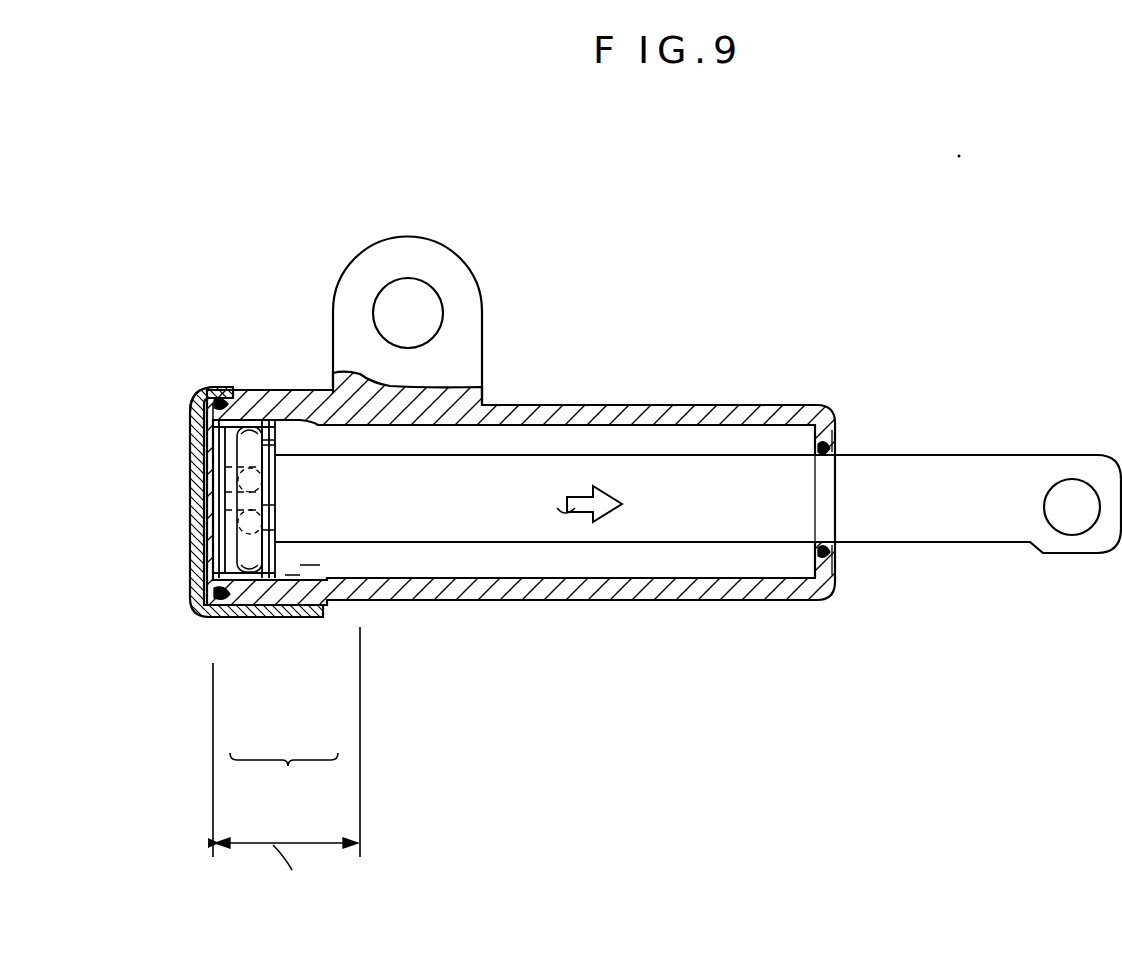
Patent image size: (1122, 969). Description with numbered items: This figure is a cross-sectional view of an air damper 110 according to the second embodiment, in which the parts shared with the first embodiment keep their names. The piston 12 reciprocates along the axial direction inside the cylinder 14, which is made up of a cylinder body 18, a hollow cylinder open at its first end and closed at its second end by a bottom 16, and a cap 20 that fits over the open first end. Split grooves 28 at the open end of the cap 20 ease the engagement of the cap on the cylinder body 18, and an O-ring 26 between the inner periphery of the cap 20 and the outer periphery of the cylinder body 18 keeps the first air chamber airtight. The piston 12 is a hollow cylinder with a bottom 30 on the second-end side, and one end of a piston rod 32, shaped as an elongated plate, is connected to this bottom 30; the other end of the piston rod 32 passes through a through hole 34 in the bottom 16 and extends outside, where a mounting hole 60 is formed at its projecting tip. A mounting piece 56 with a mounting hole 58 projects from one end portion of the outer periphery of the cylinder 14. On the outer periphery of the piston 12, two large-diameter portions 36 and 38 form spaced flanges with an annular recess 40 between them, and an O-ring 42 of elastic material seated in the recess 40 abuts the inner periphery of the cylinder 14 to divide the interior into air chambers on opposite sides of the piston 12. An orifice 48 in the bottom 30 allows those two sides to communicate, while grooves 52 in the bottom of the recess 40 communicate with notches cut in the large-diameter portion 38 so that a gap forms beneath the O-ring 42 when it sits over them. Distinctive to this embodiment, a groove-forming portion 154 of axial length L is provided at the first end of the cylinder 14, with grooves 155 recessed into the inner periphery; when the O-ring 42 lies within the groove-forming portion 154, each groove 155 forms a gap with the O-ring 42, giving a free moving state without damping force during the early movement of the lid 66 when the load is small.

The air damper 110 is at (652, 362).
The piston rod 32 is at (686, 527).
The mounting piece 56 is at (481, 285).
The mounting hole 58 is at (410, 280).
The through hole 34 is at (832, 470).
The mounting hole 60 is at (1066, 537).
The bottom 16 is at (838, 440).
The large-diameter portion 36 is at (196, 487).
The annular recess 40 is at (204, 402).
The O-ring 26 is at (219, 396).
The orifice 48 is at (216, 593).
The split grooves 28 is at (307, 390).
The cap 20 is at (184, 562).
The cylinder body 18 is at (440, 602).
The bottom 30 is at (273, 562).
The large-diameter portion 38 is at (276, 472).
The O-ring 42 is at (243, 575).
The grooves 52 is at (262, 488).
The piston 12 is at (280, 443).
The grooves 155 is at (288, 445).
The groove-forming portion 154 is at (312, 568).
The cylinder 14 is at (284, 780).
The lid 66 is at (502, 563).